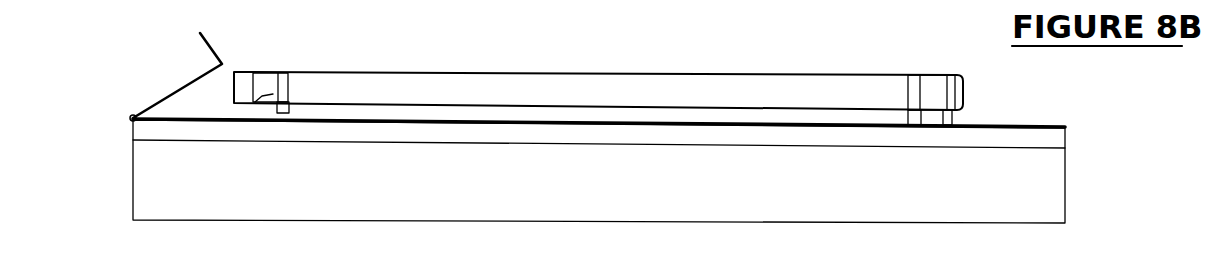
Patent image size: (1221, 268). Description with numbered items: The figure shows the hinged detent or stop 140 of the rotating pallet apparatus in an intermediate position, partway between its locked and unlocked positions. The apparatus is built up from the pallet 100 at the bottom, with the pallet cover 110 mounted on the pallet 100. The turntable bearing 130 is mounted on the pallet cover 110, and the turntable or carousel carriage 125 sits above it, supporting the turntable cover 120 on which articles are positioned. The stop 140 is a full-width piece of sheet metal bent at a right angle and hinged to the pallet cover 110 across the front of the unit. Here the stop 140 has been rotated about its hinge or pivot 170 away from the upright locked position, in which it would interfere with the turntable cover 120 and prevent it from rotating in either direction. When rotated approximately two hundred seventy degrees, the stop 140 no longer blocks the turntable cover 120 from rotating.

The pallet 100 is at (147, 185).
The pallet cover 110 is at (150, 137).
The turntable cover 120 is at (250, 68).
The turntable or carousel carriage 125 is at (272, 100).
The turntable bearing 130 is at (290, 94).
The detent or stop 140 is at (217, 59).
The hinge or pivot 170 is at (130, 117).